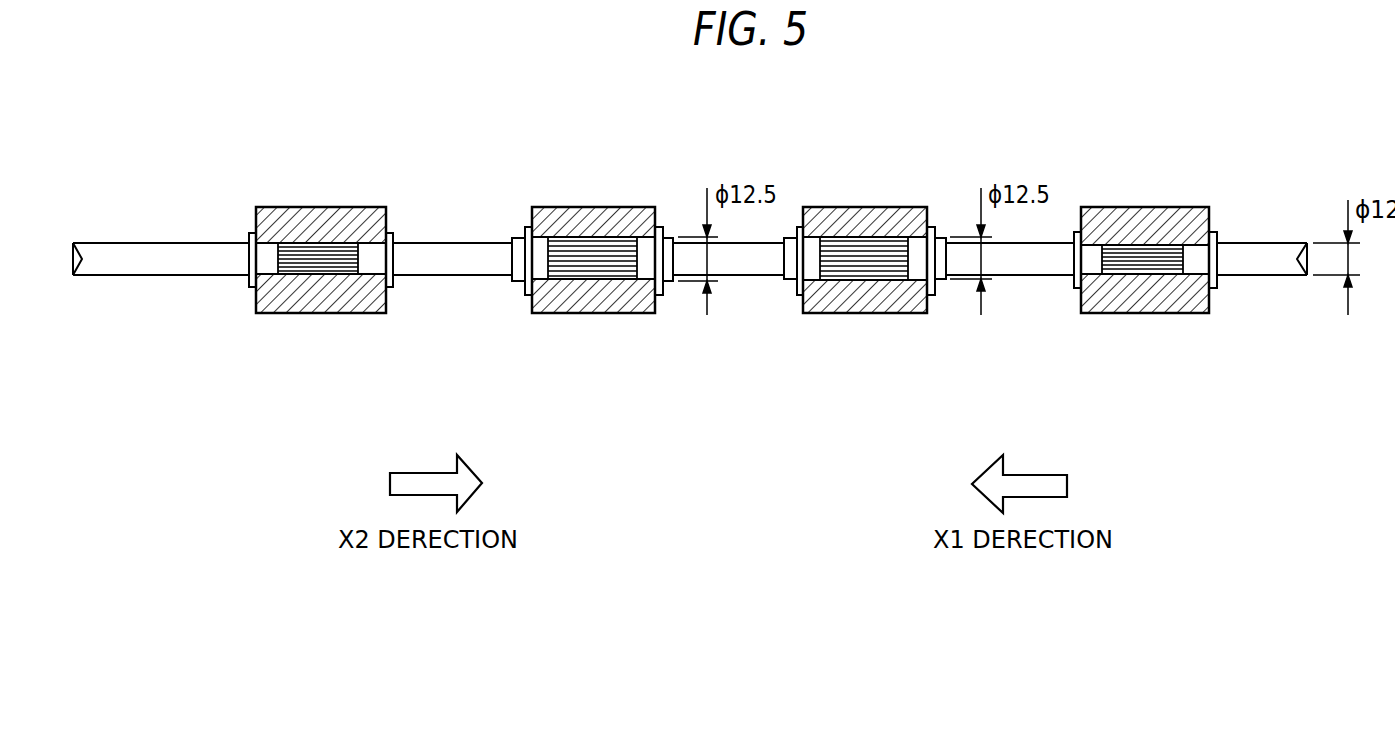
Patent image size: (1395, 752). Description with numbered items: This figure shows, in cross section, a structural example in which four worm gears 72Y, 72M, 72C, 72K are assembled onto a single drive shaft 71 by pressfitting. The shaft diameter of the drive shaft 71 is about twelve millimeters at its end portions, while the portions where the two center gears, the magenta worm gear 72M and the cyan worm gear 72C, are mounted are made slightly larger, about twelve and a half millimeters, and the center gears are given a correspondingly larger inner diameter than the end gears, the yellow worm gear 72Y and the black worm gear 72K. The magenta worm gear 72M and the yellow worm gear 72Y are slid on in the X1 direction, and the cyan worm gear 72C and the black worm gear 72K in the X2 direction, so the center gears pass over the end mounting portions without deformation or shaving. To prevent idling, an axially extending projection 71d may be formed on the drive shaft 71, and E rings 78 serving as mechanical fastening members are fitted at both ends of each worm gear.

The drive shaft 71 is at (467, 243).
The projection 71d is at (277, 257).
The worm gear for black 72K is at (275, 306).
The worm gear for cyan 72C is at (562, 313).
The worm gear for magenta 72M is at (833, 313).
The worm gear for yellow 72Y is at (1125, 313).
The E ring 78 is at (929, 228).